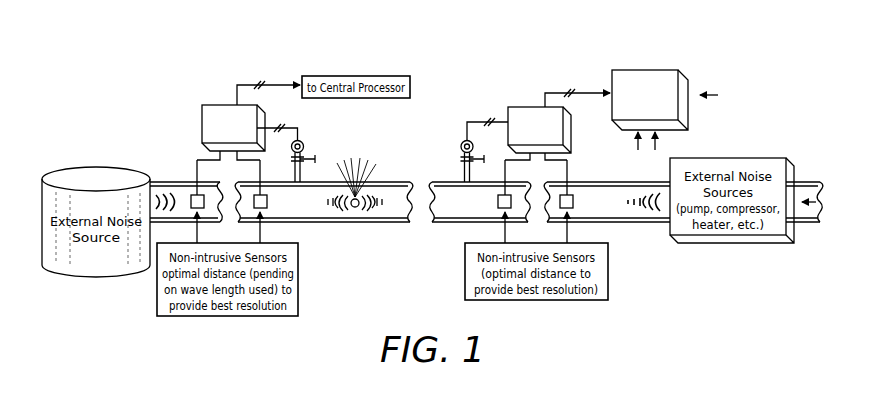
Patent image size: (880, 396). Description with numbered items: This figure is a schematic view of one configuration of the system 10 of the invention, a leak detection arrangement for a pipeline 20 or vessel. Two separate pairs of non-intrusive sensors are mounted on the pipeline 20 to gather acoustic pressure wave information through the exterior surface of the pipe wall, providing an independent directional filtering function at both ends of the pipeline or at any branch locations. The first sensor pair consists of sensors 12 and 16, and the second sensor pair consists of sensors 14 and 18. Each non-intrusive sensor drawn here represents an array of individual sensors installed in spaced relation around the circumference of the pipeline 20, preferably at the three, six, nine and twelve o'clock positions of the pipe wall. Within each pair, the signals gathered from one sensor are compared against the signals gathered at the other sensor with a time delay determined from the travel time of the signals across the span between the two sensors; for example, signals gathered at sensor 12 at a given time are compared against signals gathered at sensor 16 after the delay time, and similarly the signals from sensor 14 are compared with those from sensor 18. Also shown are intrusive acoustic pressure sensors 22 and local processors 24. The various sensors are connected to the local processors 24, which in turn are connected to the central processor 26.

The system 10 is at (587, 51).
The non-intrusive sensor 12 is at (201, 193).
The non-intrusive sensor 14 is at (573, 195).
The non-intrusive sensor 16 is at (269, 209).
The non-intrusive sensor 18 is at (497, 209).
The pipeline 20 is at (354, 216).
The intrusive acoustic pressure sensor 22 is at (303, 142).
The local processor 24 is at (202, 112).
The central processor 26 is at (650, 70).